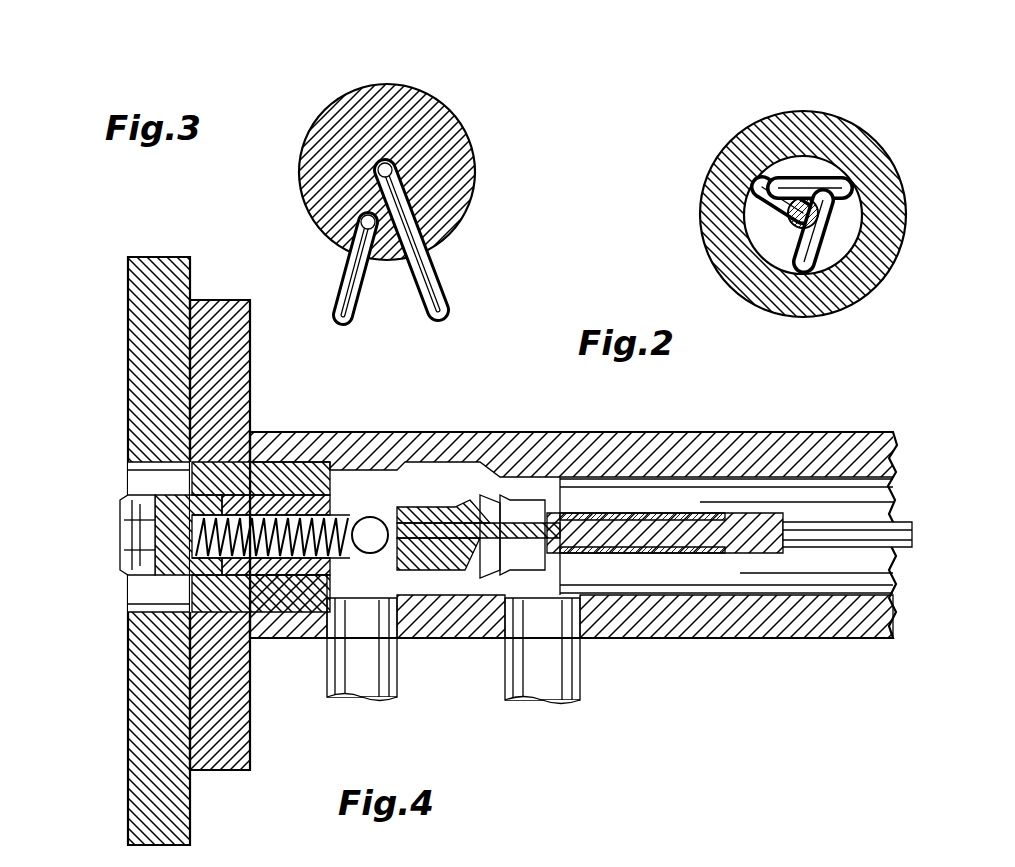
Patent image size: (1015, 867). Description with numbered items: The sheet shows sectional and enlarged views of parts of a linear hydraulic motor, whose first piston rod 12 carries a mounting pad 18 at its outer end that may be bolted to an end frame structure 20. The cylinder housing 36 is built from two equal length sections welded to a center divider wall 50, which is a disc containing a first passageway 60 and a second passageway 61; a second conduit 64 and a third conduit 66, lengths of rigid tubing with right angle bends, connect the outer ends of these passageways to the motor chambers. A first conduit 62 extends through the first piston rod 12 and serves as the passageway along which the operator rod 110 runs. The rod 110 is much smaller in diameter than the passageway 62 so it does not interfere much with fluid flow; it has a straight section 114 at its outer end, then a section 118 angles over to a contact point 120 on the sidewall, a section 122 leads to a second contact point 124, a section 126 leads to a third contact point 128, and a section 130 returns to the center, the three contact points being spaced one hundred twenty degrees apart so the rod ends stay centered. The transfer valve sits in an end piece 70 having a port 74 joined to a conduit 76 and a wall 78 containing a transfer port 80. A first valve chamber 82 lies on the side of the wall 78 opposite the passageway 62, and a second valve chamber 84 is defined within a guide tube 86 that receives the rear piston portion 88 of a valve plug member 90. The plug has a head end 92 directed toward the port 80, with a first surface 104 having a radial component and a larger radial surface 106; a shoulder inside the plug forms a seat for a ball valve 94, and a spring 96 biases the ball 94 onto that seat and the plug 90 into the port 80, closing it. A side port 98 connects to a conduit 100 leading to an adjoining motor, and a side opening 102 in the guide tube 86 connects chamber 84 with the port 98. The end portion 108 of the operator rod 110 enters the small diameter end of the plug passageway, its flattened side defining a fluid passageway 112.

In FIG. 4, the first piston rod 12 is at (800, 622).
In FIG. 4, the mounting pad 18 is at (232, 302).
In FIG. 4, the end frame structure 20 is at (150, 318).
In FIG. 3, the cylinder housing 36 is at (298, 172).
In FIG. 3, the center divider wall 50 is at (455, 150).
In FIG. 3, the first passageway 60 is at (362, 222).
In FIG. 3, the second passageway 61 is at (394, 170).
In FIG. 2, the first conduit 62 is at (756, 234).
In FIG. 4, the first conduit 62 is at (680, 572).
In FIG. 3, the second conduit 64 is at (336, 304).
In FIG. 3, the third conduit 66 is at (445, 286).
In FIG. 4, the end piece 70 is at (326, 430).
In FIG. 4, the port 74 is at (532, 655).
In FIG. 4, the conduit 76 is at (582, 660).
In FIG. 4, the wall 78 is at (525, 500).
In FIG. 4, the transfer port 80 is at (485, 645).
In FIG. 4, the first valve chamber 82 is at (445, 470).
In FIG. 4, the second valve chamber 84 is at (262, 500).
In FIG. 4, the guide tube 86 is at (296, 500).
In FIG. 4, the rear piston portion 88 is at (270, 592).
In FIG. 4, the valve plug member 90 is at (396, 505).
In FIG. 4, the head end 92 is at (497, 476).
In FIG. 4, the ball valve 94 is at (372, 516).
In FIG. 4, the spring 96 is at (140, 500).
In FIG. 4, the side port 98 is at (392, 652).
In FIG. 4, the conduit 100 is at (402, 672).
In FIG. 4, the side opening 102 is at (248, 582).
In FIG. 4, the first surface 104 is at (455, 600).
In FIG. 4, the radial surface 106 is at (330, 655).
In FIG. 4, the end portion 108 is at (580, 440).
In FIG. 2, the operator rod 110 is at (784, 242).
In FIG. 4, the operator rod 110 is at (818, 516).
In FIG. 4, the fluid passageway 112 is at (550, 702).
In FIG. 2, the straight section 114 is at (812, 216).
In FIG. 2, the section 118 is at (758, 152).
In FIG. 2, the contact point 120 is at (776, 190).
In FIG. 2, the section 122 is at (822, 184).
In FIG. 2, the second contact point 124 is at (856, 192).
In FIG. 2, the section 126 is at (832, 240).
In FIG. 2, the third contact point 128 is at (830, 300).
In FIG. 2, the section 130 is at (802, 238).